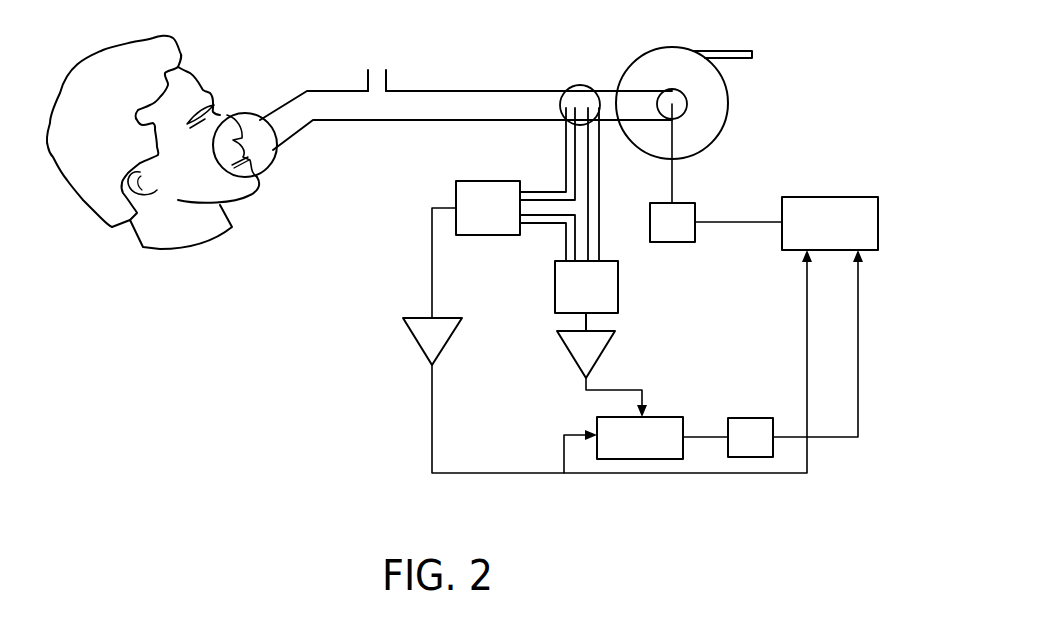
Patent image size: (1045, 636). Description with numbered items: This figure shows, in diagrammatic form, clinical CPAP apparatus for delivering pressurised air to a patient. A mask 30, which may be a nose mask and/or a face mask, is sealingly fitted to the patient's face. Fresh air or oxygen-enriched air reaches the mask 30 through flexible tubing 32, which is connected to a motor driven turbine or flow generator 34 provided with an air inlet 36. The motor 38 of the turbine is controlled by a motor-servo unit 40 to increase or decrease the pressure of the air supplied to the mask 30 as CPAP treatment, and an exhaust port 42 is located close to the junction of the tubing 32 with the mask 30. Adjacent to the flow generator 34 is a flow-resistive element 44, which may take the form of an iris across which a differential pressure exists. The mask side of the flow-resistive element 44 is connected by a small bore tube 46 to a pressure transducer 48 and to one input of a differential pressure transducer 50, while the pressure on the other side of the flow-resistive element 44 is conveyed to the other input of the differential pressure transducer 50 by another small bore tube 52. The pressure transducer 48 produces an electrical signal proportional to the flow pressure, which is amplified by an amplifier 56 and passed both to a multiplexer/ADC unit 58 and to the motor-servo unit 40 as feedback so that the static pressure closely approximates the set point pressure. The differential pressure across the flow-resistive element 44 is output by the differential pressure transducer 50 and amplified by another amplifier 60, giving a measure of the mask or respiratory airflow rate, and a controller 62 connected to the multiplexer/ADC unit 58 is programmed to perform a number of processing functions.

The mask 30 is at (243, 112).
The flexible tubing 32 is at (437, 98).
The motor driven turbine (flow generator) 34 is at (718, 112).
The air inlet 36 is at (754, 54).
The motor 38 is at (687, 209).
The motor-servo unit 40 is at (835, 195).
The exhaust port 42 is at (377, 72).
The flow-resistive element 44 is at (579, 87).
The small bore tube 46 is at (568, 152).
The pressure transducer 48 is at (485, 237).
The differential pressure transducer 50 is at (620, 273).
The small bore tube 52 is at (593, 198).
The amplifier 56 is at (453, 330).
The multiplexer/ADC unit 58 is at (665, 415).
The amplifier 60 is at (600, 355).
The controller 62 is at (762, 418).